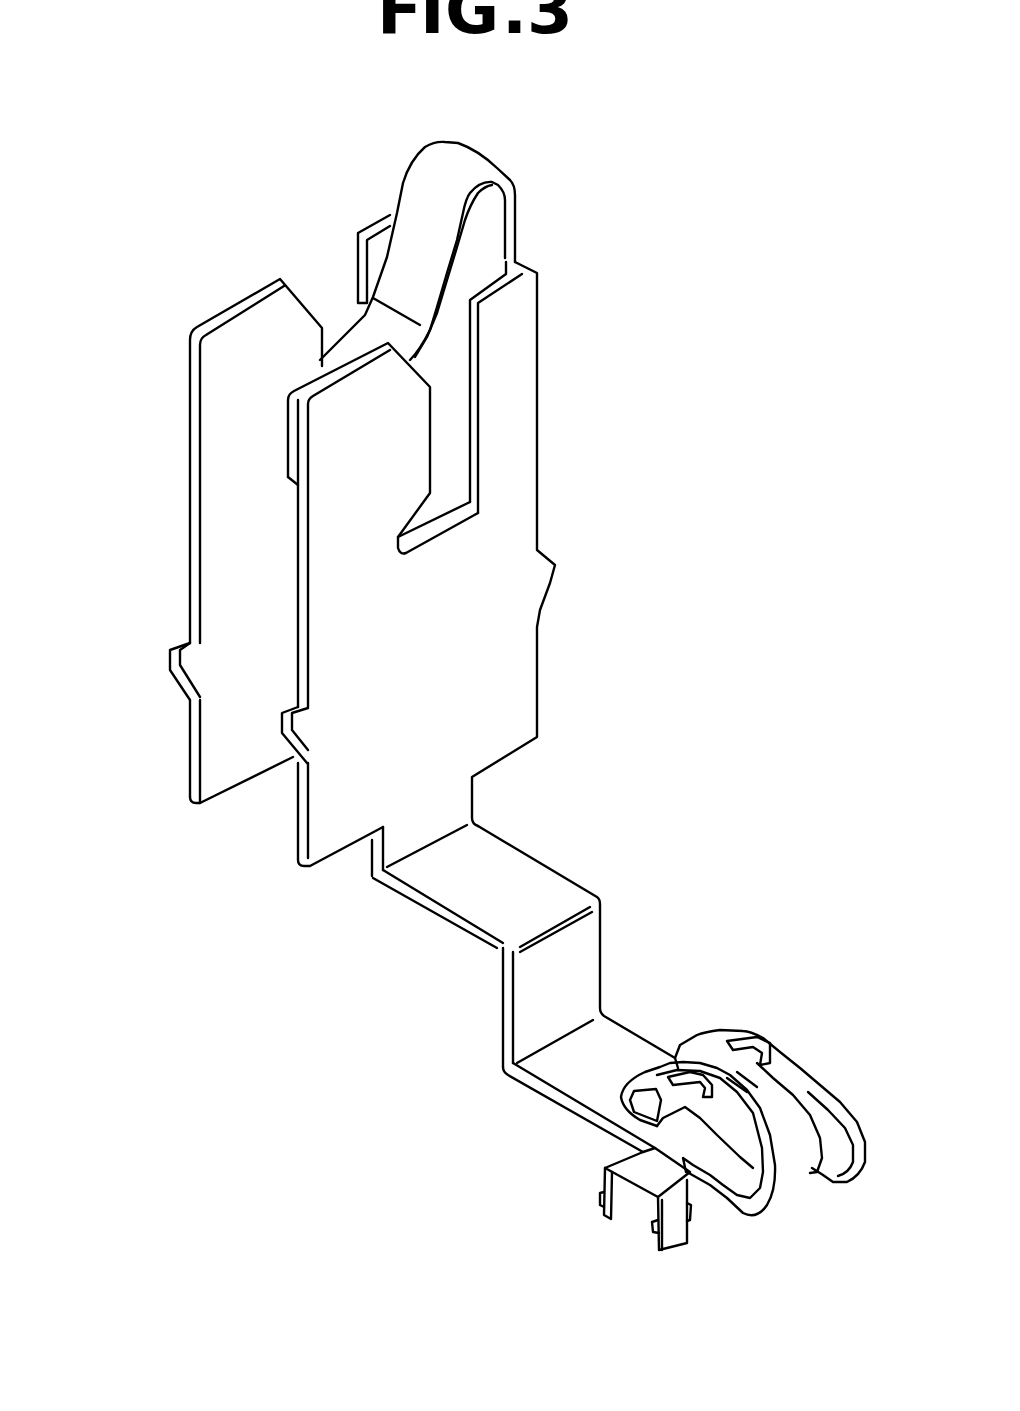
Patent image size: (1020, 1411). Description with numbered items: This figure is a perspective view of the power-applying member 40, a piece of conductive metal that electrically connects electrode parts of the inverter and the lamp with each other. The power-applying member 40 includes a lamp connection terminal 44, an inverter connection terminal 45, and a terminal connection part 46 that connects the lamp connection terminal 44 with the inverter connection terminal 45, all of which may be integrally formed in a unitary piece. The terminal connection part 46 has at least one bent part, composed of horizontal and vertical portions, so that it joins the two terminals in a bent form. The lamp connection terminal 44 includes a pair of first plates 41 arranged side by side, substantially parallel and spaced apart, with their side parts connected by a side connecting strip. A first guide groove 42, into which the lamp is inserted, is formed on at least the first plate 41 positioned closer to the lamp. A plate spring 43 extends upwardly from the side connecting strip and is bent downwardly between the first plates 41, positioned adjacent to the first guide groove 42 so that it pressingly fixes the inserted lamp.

The power-applying member 40 is at (653, 220).
The first plate 41 is at (335, 530).
The first guide groove 42 is at (480, 517).
The plate spring 43 is at (407, 268).
The lamp connection terminal 44 is at (217, 303).
The inverter connection terminal 45 is at (607, 1250).
The terminal connection part 46 is at (522, 872).